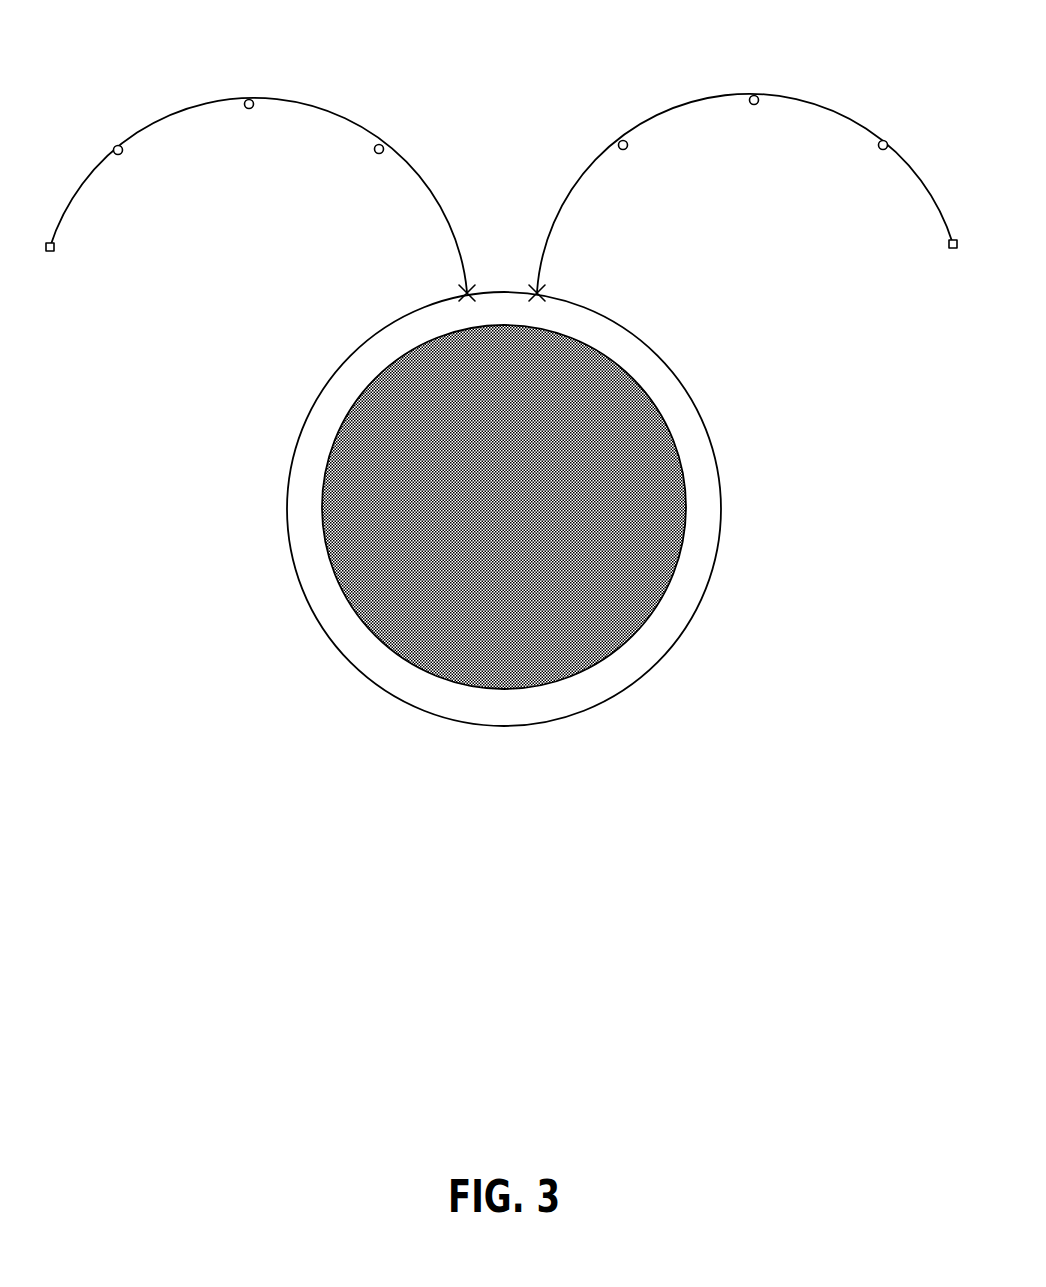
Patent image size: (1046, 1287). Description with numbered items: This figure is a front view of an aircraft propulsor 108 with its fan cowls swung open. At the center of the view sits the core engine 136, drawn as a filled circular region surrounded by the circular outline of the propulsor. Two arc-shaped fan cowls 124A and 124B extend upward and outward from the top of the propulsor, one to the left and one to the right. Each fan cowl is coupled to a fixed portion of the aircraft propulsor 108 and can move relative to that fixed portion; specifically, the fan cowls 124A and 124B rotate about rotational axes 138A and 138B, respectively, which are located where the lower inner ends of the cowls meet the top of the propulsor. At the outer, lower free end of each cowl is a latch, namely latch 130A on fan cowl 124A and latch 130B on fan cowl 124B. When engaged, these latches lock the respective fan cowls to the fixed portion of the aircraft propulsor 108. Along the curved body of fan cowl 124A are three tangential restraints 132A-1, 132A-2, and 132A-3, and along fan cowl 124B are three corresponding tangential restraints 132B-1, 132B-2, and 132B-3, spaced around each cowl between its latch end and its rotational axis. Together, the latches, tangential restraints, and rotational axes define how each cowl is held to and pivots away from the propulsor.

The aircraft propulsor 108 is at (348, 660).
The core engine 136 is at (577, 615).
The fan cowl 124A is at (205, 104).
The fan cowl 124B is at (802, 98).
The latch 130A is at (53, 250).
The latch 130B is at (950, 248).
The tangential restraint 132A-1 is at (121, 155).
The tangential restraint 132A-2 is at (252, 100).
The tangential restraint 132A-3 is at (376, 153).
The tangential restraint 132B-1 is at (880, 149).
The tangential restraint 132B-2 is at (752, 96).
The tangential restraint 132B-3 is at (625, 149).
The rotational axis 138A is at (467, 293).
The rotational axis 138B is at (537, 293).